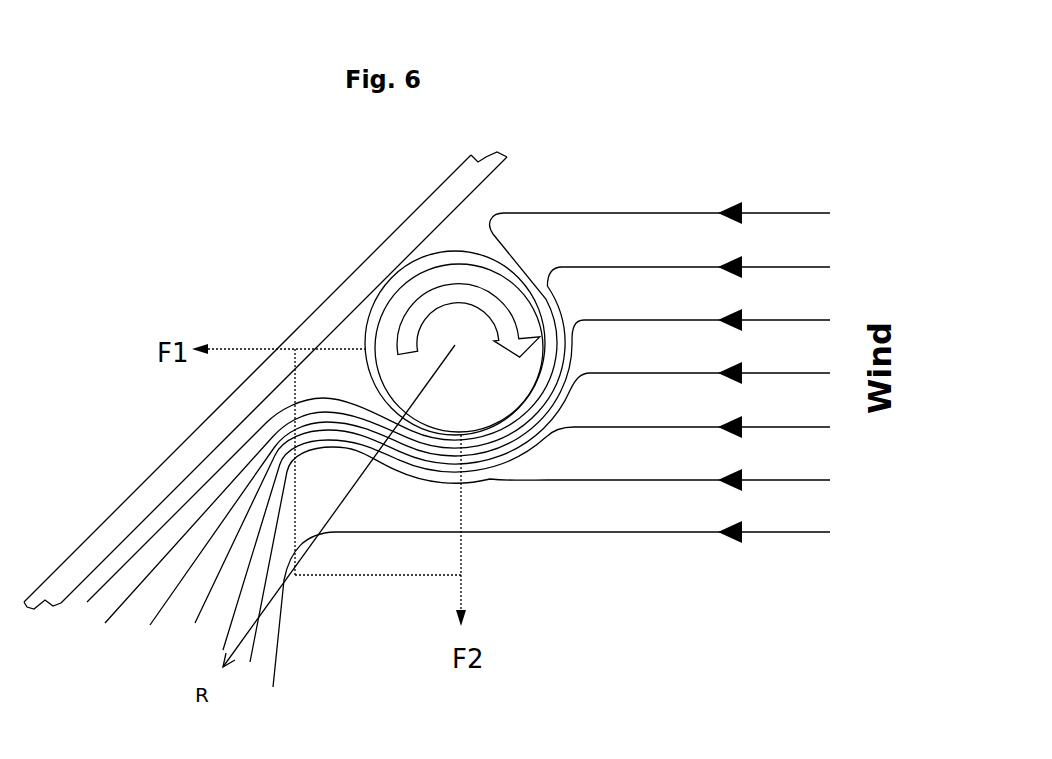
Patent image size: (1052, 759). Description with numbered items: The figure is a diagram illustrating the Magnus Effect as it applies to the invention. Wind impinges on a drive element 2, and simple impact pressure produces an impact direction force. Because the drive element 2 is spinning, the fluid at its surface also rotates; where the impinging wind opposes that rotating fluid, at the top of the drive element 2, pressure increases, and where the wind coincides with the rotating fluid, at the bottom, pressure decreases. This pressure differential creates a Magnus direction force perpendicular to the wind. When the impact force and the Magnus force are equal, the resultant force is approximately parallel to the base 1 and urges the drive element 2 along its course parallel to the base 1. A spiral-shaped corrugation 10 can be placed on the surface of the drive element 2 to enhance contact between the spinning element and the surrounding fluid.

The base 1 is at (418, 235).
The drive element 2 is at (408, 318).
The spiral-shaped corrugation 10 is at (368, 340).